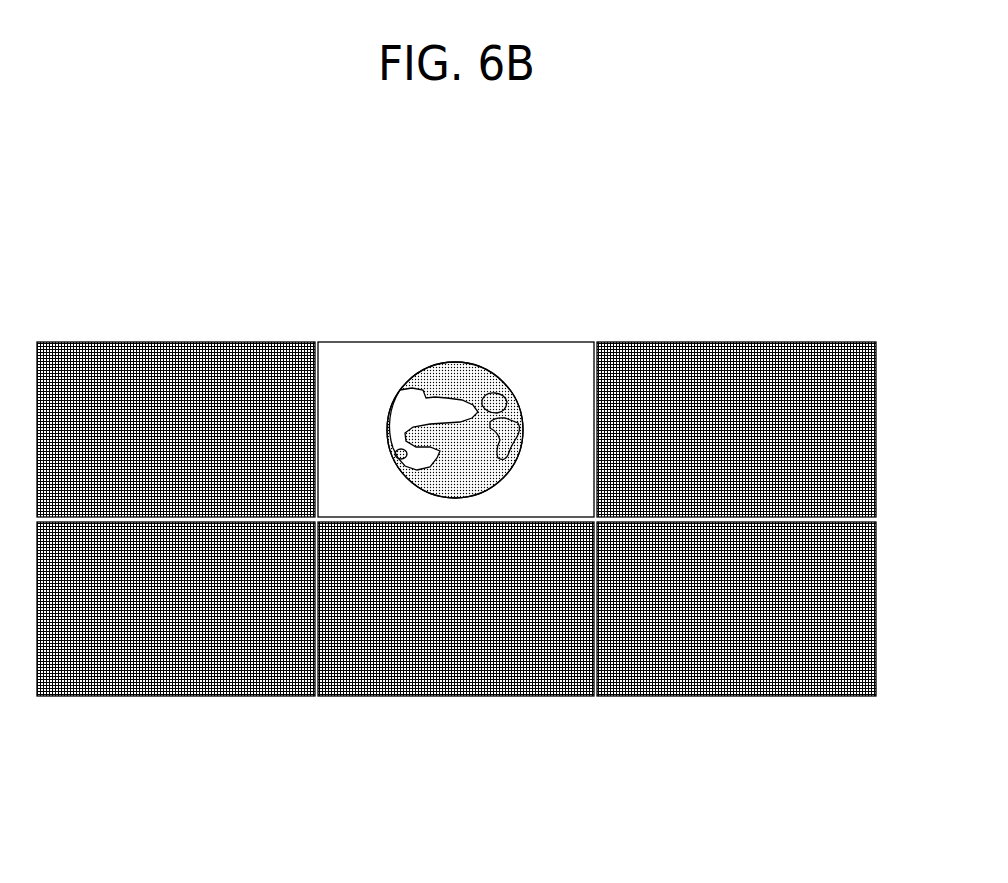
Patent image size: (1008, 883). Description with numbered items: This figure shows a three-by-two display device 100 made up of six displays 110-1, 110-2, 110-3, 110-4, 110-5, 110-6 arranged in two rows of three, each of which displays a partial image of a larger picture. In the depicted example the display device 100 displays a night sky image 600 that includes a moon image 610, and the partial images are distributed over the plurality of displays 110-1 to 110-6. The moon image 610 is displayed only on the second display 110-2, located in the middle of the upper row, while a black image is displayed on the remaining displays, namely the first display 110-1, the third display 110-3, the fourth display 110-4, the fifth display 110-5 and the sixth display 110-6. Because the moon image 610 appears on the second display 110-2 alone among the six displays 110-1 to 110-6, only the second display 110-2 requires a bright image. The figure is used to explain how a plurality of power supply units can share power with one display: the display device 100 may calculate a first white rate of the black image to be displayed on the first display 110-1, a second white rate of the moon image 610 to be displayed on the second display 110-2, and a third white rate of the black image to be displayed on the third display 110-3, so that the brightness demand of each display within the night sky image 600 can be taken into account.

The display device 100 is at (70, 251).
The night sky image 600 is at (223, 362).
The moon image 610 is at (479, 363).
The first display 110-1 is at (268, 343).
The second display 110-2 is at (547, 343).
The third display 110-3 is at (828, 343).
The fourth display 110-4 is at (267, 697).
The fifth display 110-5 is at (547, 697).
The sixth display 110-6 is at (825, 697).